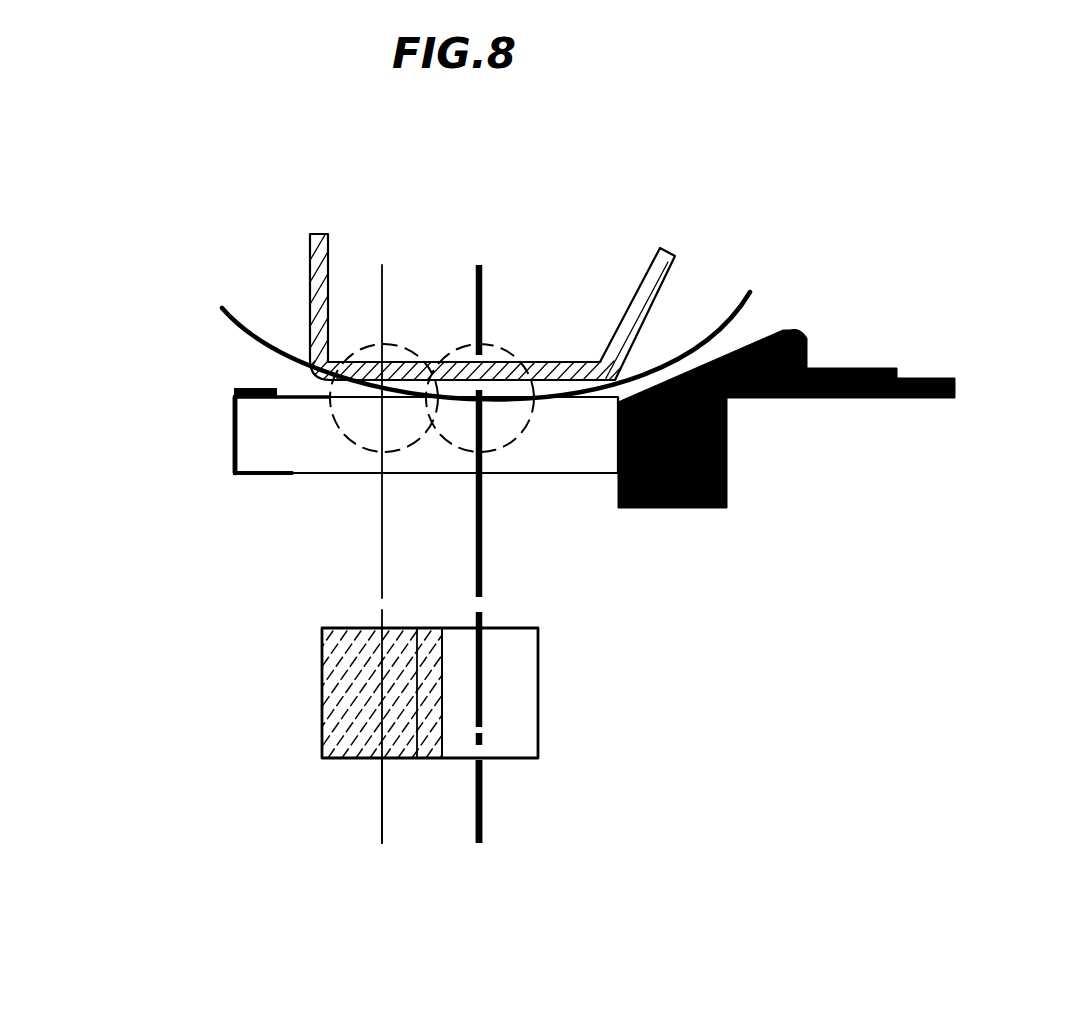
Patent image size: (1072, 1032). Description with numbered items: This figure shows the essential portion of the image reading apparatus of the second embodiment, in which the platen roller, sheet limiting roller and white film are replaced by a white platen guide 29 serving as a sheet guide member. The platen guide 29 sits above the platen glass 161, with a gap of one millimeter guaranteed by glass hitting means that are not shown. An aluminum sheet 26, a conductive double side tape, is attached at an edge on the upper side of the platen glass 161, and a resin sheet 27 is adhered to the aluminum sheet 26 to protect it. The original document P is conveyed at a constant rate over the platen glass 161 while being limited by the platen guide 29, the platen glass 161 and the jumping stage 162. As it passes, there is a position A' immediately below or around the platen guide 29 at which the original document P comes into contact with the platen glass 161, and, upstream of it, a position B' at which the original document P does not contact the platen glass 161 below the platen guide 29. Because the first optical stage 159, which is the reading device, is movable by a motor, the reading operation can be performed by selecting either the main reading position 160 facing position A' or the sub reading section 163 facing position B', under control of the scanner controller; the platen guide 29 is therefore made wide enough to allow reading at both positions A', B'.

The platen guide 29 is at (546, 363).
The original document P is at (705, 320).
The jumping stage 162 is at (733, 455).
The platen glass 161 is at (328, 460).
The aluminum sheet 26 is at (233, 410).
The resin sheet 27 is at (248, 388).
The position B' is at (389, 554).
The position A' is at (536, 554).
The first optical stage 159 is at (525, 698).
The sub reading section 163 is at (389, 873).
The main reading position 160 is at (478, 857).